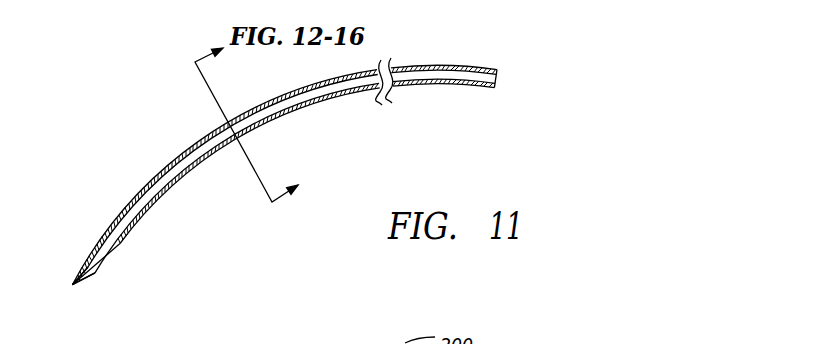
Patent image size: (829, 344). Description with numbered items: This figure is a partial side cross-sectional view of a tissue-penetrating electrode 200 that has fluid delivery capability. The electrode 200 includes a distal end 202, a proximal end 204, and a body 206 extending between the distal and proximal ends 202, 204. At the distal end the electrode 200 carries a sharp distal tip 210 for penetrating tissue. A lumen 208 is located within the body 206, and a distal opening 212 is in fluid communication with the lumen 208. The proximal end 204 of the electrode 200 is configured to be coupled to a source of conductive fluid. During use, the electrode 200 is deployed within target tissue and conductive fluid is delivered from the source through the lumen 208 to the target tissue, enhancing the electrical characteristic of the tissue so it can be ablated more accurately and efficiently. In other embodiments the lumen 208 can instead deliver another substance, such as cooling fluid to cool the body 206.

The electrode 200 is at (422, 45).
The distal end 202 is at (113, 246).
The proximal end 204 is at (482, 89).
The body 206 is at (303, 109).
The lumen 208 is at (441, 74).
The sharp distal tip 210 is at (72, 285).
The distal opening 212 is at (78, 280).